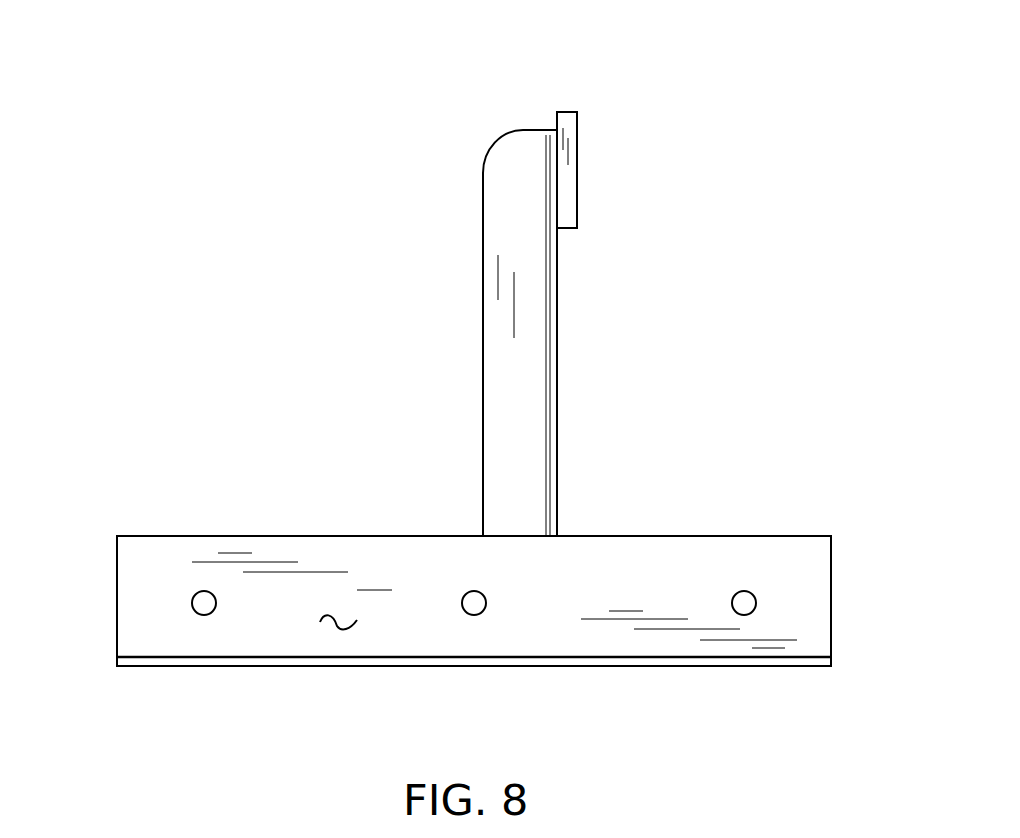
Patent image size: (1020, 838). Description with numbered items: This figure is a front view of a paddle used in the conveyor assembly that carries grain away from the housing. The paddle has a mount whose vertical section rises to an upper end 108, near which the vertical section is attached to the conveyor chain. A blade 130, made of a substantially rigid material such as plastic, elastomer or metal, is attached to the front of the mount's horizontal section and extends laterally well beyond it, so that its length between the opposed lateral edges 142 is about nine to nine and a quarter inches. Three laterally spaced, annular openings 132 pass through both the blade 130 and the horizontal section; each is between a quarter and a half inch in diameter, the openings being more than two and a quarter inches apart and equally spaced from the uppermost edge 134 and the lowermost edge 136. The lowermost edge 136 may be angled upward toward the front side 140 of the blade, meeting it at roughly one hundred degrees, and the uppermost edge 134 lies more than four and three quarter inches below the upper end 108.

The upper end 108 is at (566, 112).
The blade 130 is at (831, 536).
The opening 132 is at (204, 615).
The uppermost edge 134 is at (700, 536).
The lowermost edge 136 is at (673, 662).
The front side 140 is at (336, 630).
The lateral edges 142 is at (117, 608).